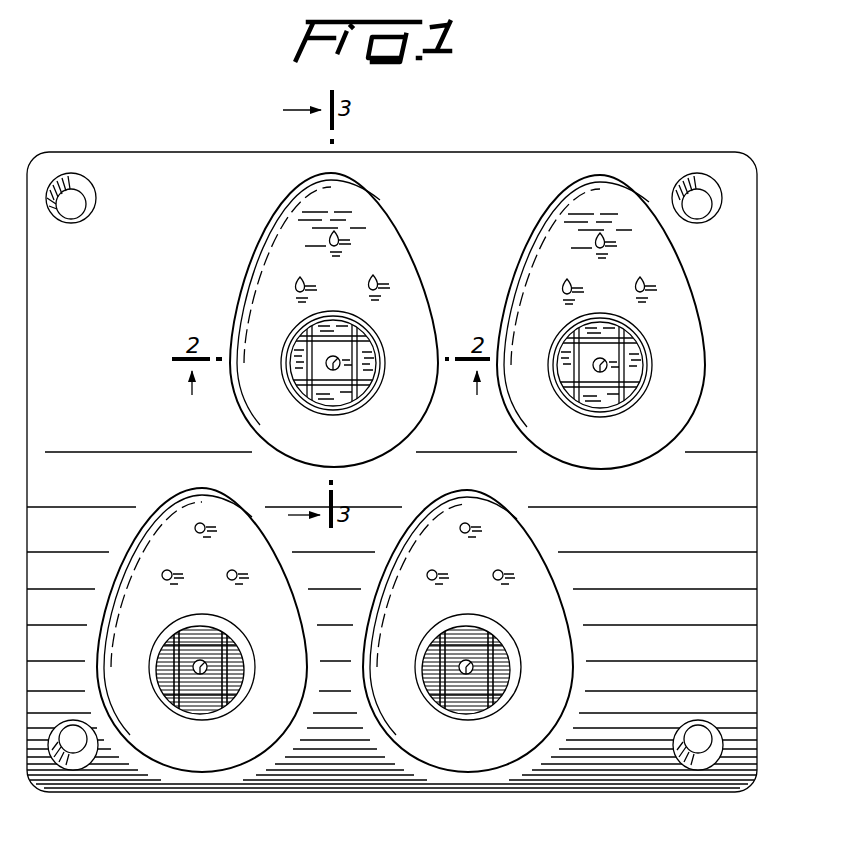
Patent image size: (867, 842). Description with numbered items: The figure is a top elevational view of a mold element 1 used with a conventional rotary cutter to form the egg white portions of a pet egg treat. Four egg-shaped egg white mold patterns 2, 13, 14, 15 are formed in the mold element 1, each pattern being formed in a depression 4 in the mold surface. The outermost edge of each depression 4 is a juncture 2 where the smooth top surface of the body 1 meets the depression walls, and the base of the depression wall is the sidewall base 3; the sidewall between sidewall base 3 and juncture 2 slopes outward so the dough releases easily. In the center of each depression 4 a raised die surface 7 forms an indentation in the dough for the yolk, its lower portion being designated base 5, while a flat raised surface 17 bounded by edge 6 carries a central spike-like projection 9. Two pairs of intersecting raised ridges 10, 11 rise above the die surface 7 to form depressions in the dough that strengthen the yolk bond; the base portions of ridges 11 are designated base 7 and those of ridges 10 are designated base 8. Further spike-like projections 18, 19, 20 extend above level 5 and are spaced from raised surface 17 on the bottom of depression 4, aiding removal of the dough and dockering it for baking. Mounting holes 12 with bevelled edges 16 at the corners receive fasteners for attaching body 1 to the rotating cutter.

The mold element 1 is at (137, 284).
The juncture 2 is at (256, 254).
The sidewall base 3 is at (276, 231).
The depression 4 is at (372, 237).
The base of raised ridge 5 is at (293, 402).
The edge 6 is at (320, 407).
The raised die surface 7 is at (347, 387).
The base 8 is at (358, 357).
The projection 9 is at (334, 356).
The raised ridges 10 is at (357, 373).
The raised ridges 11 is at (328, 388).
The mounting holes 12 is at (69, 190).
The egg white mold pattern 13 is at (146, 527).
The egg white mold pattern 14 is at (553, 570).
The egg white mold pattern 15 is at (708, 388).
The bevelled edges 16 is at (76, 174).
The raised surface 17 is at (289, 370).
The projection 18 is at (336, 232).
The projection 19 is at (297, 283).
The projection 20 is at (375, 280).